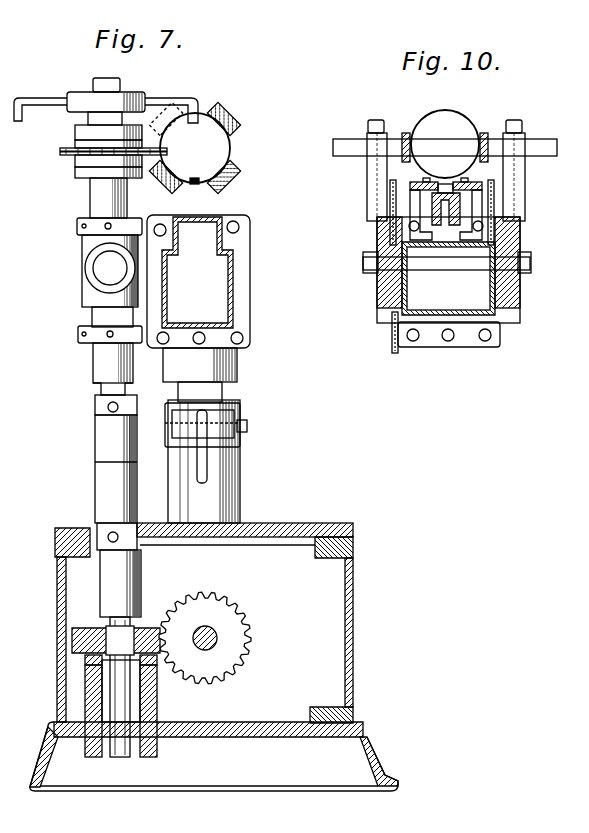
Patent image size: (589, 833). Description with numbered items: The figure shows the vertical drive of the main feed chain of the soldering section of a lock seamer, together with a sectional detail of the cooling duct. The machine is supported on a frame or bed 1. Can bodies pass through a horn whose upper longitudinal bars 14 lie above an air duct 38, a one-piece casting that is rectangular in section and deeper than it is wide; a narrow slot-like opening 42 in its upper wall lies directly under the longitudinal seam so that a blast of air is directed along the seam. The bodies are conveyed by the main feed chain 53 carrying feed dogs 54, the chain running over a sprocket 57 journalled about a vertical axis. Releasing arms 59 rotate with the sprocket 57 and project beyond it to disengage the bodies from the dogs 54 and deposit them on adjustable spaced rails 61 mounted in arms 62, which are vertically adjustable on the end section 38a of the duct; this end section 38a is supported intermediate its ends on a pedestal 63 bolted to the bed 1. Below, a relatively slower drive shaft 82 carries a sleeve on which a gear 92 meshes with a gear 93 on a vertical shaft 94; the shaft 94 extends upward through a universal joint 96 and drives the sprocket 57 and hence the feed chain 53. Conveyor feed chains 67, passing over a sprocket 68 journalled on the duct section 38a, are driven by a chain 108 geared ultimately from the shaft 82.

In FIG. 7, the frame or bed 1 is at (385, 760).
In FIG. 7, the longitudinal bars 14 is at (164, 113).
In FIG. 7, the air duct 38 is at (237, 284).
In FIG. 10, the air duct 38 is at (465, 347).
In FIG. 10, the end section of the air duct 38a is at (500, 318).
In FIG. 7, the slot-like opening 42 is at (197, 222).
In FIG. 10, the slot-like opening 42 is at (446, 225).
In FIG. 7, the main feed chain 53 is at (77, 147).
In FIG. 7, the feed dogs 54 is at (62, 152).
In FIG. 7, the sprocket 57 is at (78, 165).
In FIG. 7, the releasing arms 59 is at (194, 99).
In FIG. 10, the adjustable spaced rails 61 is at (406, 133).
In FIG. 10, the arms 62 is at (372, 186).
In FIG. 7, the pedestal 63 is at (238, 478).
In FIG. 10, the feed chains 67 is at (462, 180).
In FIG. 10, the sprocket 68 is at (390, 198).
In FIG. 7, the second drive shaft 82 is at (214, 645).
In FIG. 7, the gear 92 is at (252, 641).
In FIG. 7, the gear 93 is at (150, 628).
In FIG. 7, the vertical shaft 94 is at (90, 203).
In FIG. 7, the universal joint 96 is at (97, 450).
In FIG. 10, the chain 108 is at (392, 334).